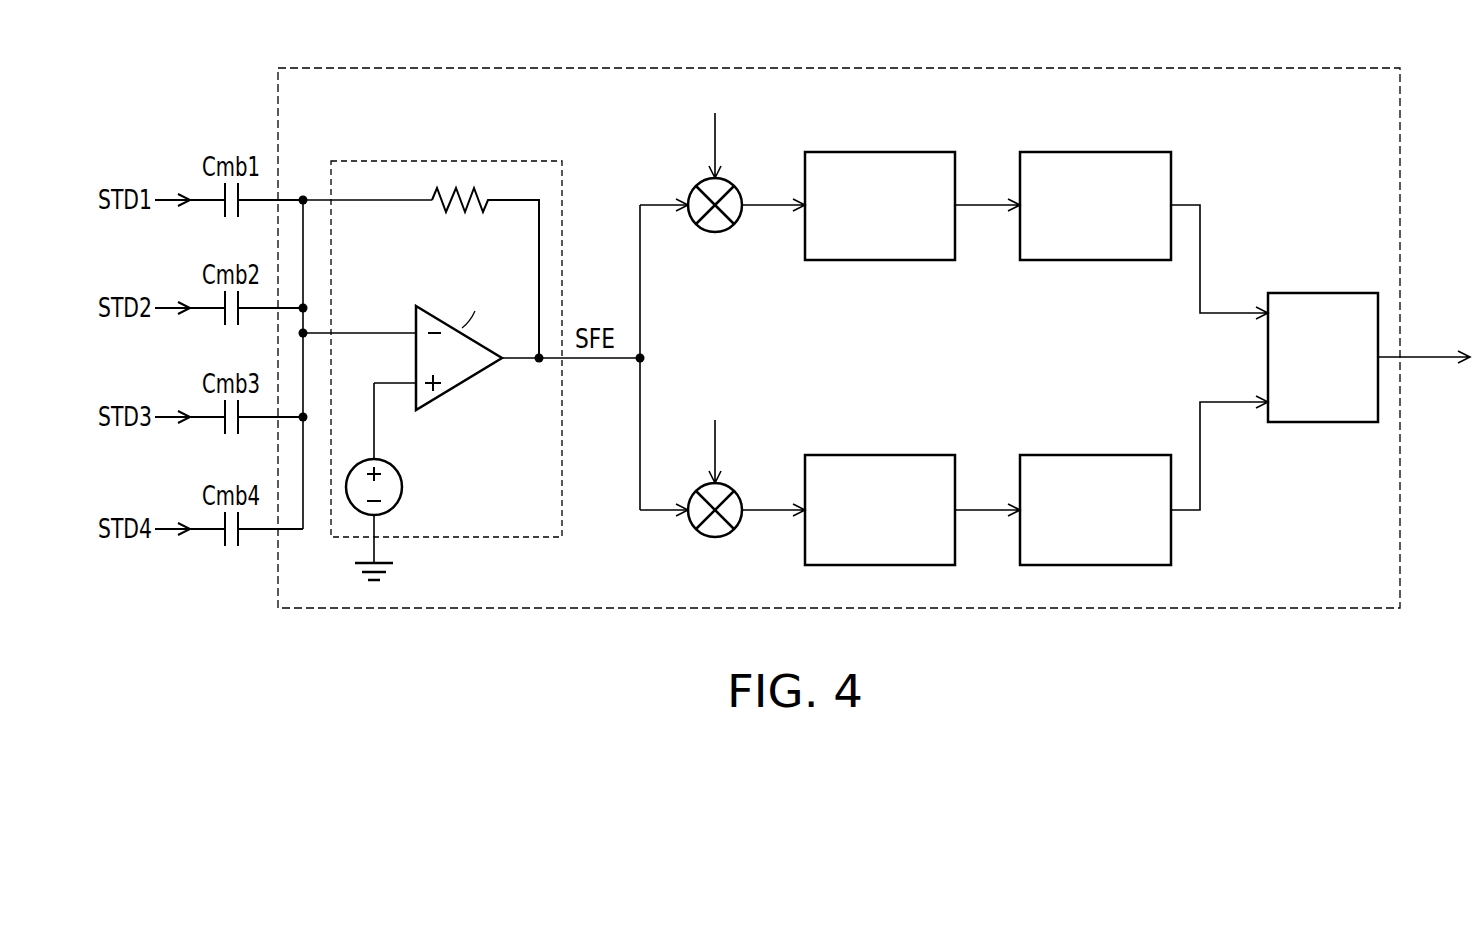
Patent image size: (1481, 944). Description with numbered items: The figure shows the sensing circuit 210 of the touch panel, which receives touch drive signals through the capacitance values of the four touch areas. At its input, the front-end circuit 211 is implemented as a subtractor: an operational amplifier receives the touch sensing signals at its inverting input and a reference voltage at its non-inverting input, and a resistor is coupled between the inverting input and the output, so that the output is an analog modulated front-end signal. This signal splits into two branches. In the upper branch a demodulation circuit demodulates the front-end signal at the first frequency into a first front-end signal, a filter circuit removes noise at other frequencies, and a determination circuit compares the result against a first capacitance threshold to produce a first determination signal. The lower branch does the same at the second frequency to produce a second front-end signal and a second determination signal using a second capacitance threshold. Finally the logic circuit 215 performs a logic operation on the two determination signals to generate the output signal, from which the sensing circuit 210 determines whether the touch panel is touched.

The sensing circuit 210 is at (828, 67).
The front-end circuit 211 is at (495, 160).
The logic circuit 215 is at (1323, 292).